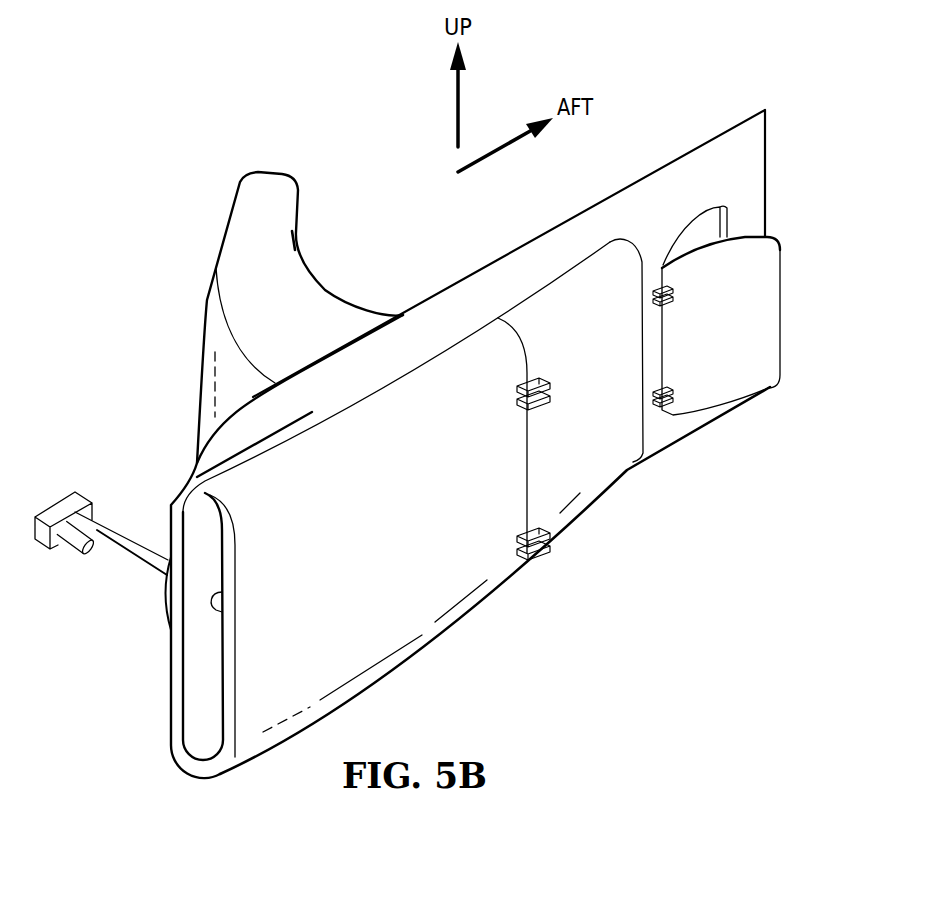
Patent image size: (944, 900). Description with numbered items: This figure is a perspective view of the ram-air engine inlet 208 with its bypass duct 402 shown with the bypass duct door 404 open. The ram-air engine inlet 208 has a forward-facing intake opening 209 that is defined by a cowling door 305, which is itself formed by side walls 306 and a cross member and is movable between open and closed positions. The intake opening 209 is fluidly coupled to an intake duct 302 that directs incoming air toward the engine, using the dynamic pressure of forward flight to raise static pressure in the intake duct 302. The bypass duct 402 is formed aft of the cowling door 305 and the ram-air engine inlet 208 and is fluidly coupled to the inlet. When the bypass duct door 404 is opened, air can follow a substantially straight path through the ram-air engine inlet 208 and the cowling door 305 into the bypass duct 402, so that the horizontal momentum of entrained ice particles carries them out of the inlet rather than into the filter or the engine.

The ram-air engine inlet 208 is at (537, 255).
The intake opening 209 is at (200, 690).
The intake duct 302 is at (318, 312).
The cowling door 305 is at (420, 623).
The side walls 306 is at (193, 510).
The bypass duct 402 is at (707, 227).
The bypass duct door 404 is at (767, 322).